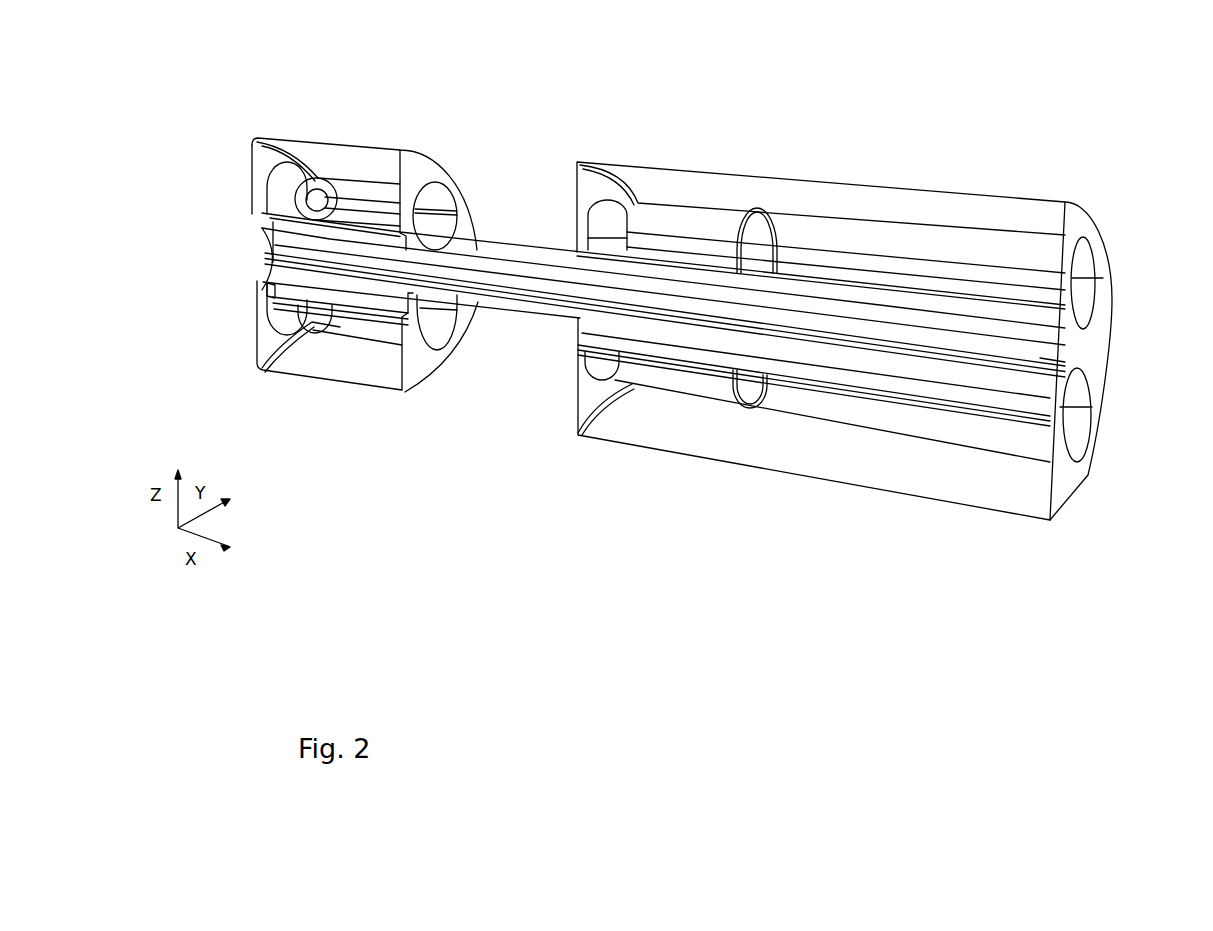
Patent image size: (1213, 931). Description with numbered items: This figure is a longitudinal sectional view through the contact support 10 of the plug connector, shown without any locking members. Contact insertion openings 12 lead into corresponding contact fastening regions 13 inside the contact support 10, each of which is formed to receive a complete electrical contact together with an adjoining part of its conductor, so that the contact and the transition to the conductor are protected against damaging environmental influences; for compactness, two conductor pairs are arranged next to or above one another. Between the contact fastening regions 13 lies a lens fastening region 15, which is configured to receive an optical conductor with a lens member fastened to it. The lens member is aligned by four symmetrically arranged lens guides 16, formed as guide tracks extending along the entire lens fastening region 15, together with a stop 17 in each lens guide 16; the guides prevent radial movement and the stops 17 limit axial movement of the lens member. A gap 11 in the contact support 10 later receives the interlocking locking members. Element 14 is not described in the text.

The contact support 10 is at (711, 74).
The gap 11 is at (476, 168).
The contact insertion opening 12 is at (1082, 302).
The contact fastening region 13 is at (372, 190).
The guide pin 14 is at (1052, 358).
The lens fastening region 15 is at (313, 277).
The lens guide 16 is at (287, 225).
The stop 17 is at (262, 281).